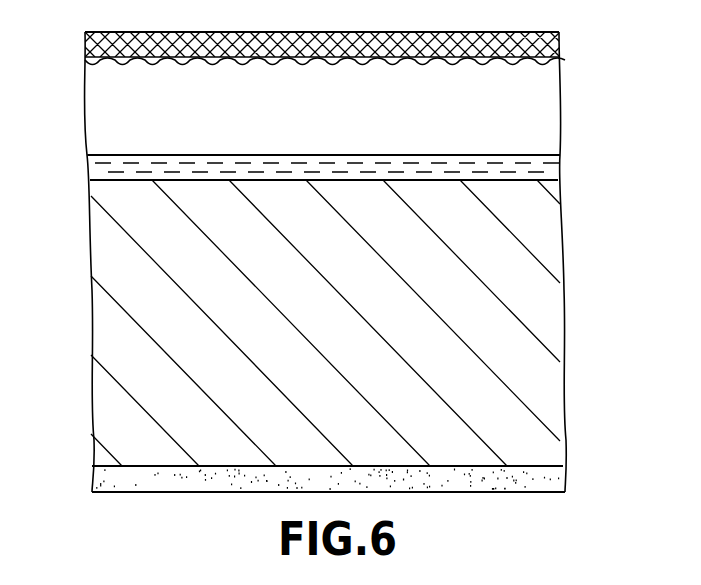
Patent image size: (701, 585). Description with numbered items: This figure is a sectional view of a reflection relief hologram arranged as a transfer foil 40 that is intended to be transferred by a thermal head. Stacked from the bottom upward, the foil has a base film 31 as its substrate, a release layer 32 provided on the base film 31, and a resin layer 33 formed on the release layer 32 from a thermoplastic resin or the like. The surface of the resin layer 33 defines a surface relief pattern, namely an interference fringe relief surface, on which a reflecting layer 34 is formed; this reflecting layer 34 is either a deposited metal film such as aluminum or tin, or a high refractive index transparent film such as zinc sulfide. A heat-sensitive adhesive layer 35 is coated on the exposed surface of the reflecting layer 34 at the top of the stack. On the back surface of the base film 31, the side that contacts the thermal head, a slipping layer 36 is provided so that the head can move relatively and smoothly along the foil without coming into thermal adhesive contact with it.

The transfer foil 40 is at (67, 235).
The base film 31 is at (550, 359).
The release layer 32 is at (556, 164).
The resin layer 33 is at (550, 117).
The reflecting layer 34 is at (560, 62).
The heat-sensitive adhesive layer 35 is at (559, 45).
The slipping layer 36 is at (550, 478).